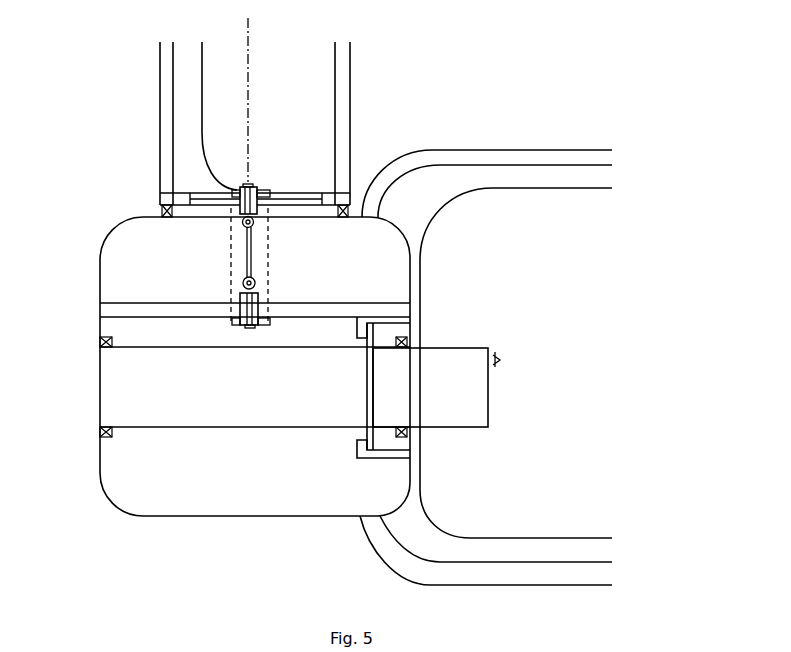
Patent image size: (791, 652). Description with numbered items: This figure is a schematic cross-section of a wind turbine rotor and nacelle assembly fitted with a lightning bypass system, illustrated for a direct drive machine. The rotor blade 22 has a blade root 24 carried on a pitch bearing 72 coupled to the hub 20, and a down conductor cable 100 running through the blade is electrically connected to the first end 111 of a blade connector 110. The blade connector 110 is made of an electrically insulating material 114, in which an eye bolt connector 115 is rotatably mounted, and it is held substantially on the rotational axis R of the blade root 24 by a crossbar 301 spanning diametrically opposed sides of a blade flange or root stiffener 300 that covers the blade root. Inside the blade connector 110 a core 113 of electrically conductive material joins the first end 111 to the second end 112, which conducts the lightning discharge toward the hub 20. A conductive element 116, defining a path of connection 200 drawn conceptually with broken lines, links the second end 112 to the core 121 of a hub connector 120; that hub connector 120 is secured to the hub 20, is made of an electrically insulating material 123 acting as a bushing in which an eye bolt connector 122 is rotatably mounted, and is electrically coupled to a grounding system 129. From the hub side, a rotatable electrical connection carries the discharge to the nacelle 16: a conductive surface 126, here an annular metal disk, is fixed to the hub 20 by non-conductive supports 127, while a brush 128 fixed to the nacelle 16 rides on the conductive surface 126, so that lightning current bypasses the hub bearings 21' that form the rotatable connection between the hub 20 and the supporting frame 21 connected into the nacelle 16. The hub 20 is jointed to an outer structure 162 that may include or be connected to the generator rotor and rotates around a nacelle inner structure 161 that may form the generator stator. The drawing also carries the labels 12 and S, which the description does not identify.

The wind turbine nacelle 16 is at (526, 339).
The hub 20 is at (89, 262).
The frame 21 is at (226, 387).
The hub bearings 21' is at (252, 346).
The rotor blade 22 is at (337, 63).
The blade root 24 is at (160, 176).
The pitch bearing 72 is at (352, 210).
The down conductor cable 100 is at (236, 111).
The blade connector 110 is at (242, 214).
The first end 111 is at (252, 186).
The second end 112 is at (270, 200).
The core 113 is at (243, 216).
The electrically insulating material 114 is at (270, 188).
The eye bolt connector 115 is at (231, 250).
The conductive element 116 is at (253, 267).
The hub connector 120 is at (223, 352).
The core 121 is at (232, 324).
The eye bolt connector 122 is at (258, 283).
The electrically insulating material 123 is at (232, 324).
The conductive surface 126 is at (357, 434).
The non-conductive supports 127 is at (400, 458).
The brush 128 is at (387, 318).
The grounding system 129 is at (503, 358).
The nacelle inner structure 161 is at (480, 198).
The outer structure 162 is at (465, 152).
The path of connection 200 is at (241, 266).
The blade flange 300 is at (340, 182).
The crossbar 301 is at (197, 192).
The plate 12 is at (255, 306).
The rotational axis R is at (248, 73).
The surface S is at (331, 309).